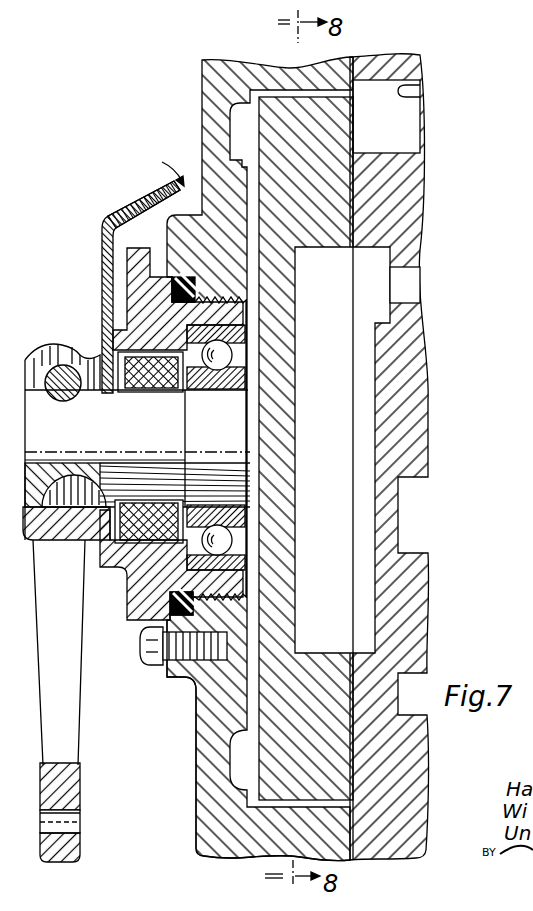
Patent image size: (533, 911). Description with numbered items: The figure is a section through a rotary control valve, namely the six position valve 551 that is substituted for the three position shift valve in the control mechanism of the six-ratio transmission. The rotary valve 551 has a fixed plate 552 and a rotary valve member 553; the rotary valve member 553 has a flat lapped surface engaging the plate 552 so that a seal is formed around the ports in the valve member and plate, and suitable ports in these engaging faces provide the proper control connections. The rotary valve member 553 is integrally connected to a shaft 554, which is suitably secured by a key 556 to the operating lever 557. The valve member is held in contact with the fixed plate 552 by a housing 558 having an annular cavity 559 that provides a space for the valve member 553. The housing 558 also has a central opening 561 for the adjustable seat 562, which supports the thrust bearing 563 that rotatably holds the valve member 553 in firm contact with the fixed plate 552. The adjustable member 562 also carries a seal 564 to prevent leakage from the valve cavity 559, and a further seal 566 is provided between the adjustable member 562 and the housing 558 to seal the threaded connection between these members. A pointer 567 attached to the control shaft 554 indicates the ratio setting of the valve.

The six position valve 551 is at (158, 169).
The fixed plate 552 is at (418, 172).
The rotary valve member 553 is at (300, 240).
The shaft 554 is at (33, 400).
The key 556 is at (73, 508).
The operating lever 557 is at (69, 689).
The housing 558 is at (207, 727).
The annular cavity 559 is at (245, 617).
The central opening 561 is at (246, 590).
The adjustable seat 562 is at (130, 607).
The thrust bearing 563 is at (200, 543).
The seal 564 is at (140, 390).
The seal 566 is at (182, 303).
The pointer 567 is at (103, 228).